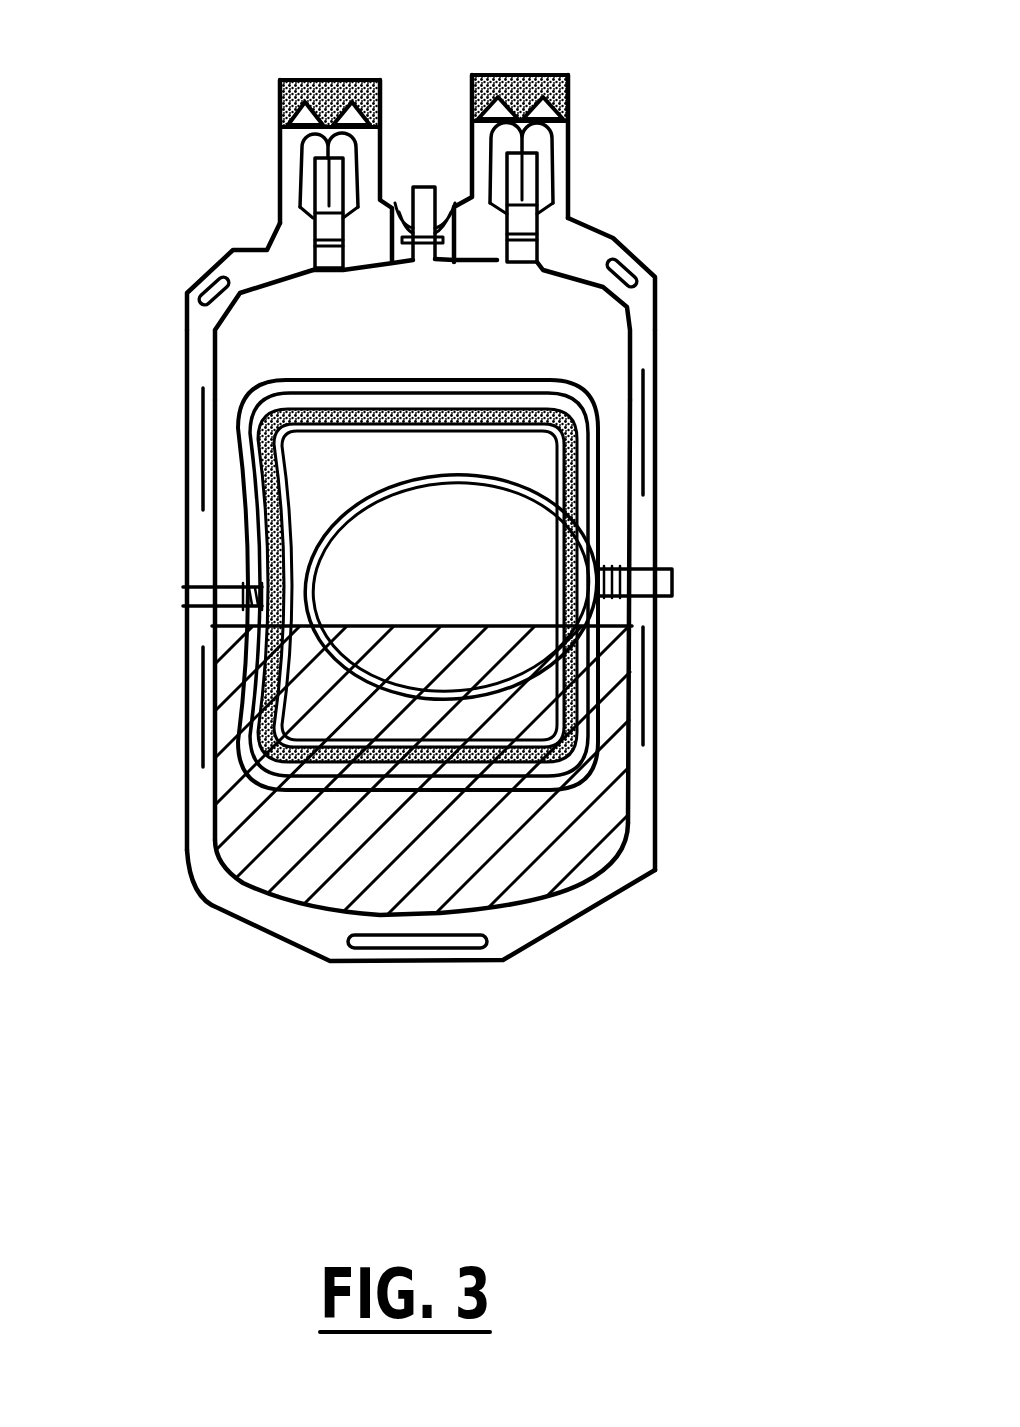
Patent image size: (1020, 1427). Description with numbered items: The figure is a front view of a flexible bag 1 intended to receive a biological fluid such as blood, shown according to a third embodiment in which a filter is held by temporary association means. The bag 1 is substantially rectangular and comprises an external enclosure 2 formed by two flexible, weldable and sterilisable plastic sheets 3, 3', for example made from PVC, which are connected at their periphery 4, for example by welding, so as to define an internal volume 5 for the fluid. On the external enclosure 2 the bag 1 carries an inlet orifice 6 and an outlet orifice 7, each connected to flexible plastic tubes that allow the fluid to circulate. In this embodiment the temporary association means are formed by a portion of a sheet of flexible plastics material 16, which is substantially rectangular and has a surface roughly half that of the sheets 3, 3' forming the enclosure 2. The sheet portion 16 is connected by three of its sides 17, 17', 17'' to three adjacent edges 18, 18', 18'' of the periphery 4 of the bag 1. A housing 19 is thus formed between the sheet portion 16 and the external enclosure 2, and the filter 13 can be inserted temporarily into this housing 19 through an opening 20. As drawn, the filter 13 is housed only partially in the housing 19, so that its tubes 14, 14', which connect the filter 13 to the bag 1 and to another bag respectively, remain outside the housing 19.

The flexible bag 1 is at (747, 440).
The external enclosure 2 is at (600, 363).
The plastic sheet 3 is at (175, 390).
The plastic sheet 3' is at (590, 378).
The periphery 4 is at (288, 947).
The internal volume 5 is at (590, 330).
The inlet orifice 6 is at (280, 123).
The outlet orifice 7 is at (572, 97).
The filter 13 is at (337, 498).
The tube 14 is at (723, 545).
The tube 14' is at (151, 586).
The sheet portion 16 is at (567, 812).
The side of sheet portion 17 is at (697, 611).
The side of sheet portion 17' is at (439, 928).
The side of sheet portion 17'' is at (145, 632).
The edge of periphery 18 is at (725, 600).
The edge of periphery 18' is at (421, 977).
The edge of periphery 18'' is at (126, 590).
The housing 19 is at (608, 762).
The opening 20 is at (625, 610).